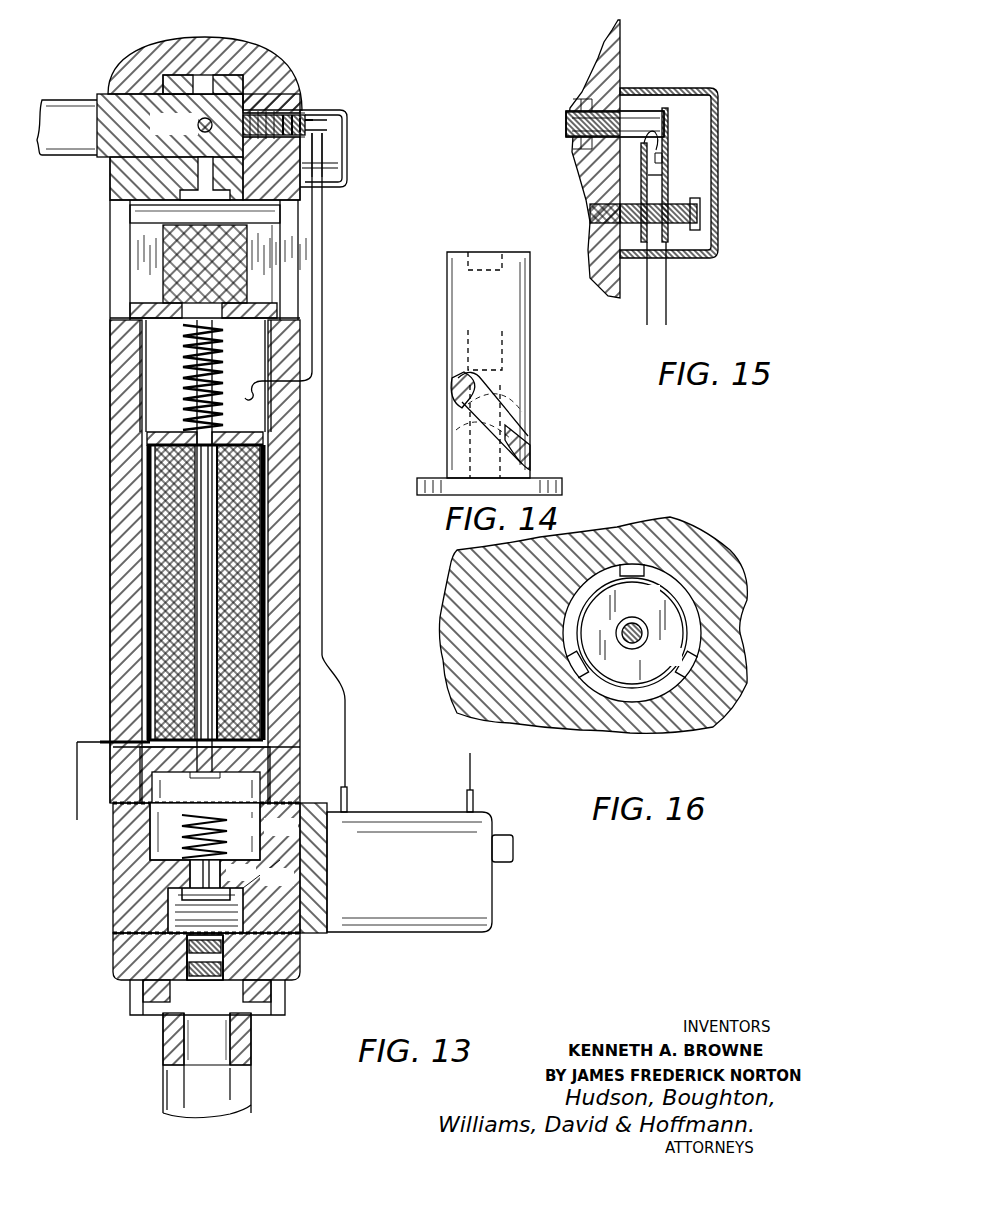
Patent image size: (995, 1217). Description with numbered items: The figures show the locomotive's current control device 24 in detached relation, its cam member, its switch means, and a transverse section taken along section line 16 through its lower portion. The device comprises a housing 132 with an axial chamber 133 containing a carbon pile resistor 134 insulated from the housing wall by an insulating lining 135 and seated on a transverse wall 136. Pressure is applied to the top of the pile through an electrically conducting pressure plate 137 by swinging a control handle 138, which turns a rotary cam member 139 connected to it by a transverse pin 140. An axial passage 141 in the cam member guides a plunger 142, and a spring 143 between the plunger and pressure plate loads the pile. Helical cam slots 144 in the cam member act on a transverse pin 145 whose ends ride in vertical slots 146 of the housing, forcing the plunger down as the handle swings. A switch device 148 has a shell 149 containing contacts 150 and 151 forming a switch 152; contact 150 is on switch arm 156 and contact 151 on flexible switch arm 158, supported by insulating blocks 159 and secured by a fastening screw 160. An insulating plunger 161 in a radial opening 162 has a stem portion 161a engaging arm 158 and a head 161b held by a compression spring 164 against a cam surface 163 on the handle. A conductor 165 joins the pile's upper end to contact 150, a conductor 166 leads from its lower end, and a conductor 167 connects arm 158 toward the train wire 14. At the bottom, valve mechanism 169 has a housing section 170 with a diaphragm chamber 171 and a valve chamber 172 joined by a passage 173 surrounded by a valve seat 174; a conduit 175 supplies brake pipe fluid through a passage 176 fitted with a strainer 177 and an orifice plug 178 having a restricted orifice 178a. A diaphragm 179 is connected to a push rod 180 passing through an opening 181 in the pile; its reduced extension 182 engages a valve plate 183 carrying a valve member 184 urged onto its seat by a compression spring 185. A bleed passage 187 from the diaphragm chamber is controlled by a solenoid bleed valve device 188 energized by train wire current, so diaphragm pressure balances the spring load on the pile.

In FIG. 13, the train wire 14 is at (472, 778).
In FIG. 13, the section line 16 is at (96, 905).
In FIG. 13, the current control device 24 is at (100, 478).
In FIG. 13, the housing 132 is at (120, 522).
In FIG. 15, the housing 132 is at (608, 62).
In FIG. 13, the axial chamber 133 is at (150, 436).
In FIG. 13, the carbon pile resistor 134 is at (250, 490).
In FIG. 13, the insulating lining 135 is at (268, 512).
In FIG. 13, the transverse wall 136 is at (150, 740).
In FIG. 13, the pressure plate 137 is at (172, 420).
In FIG. 13, the control handle 138 is at (76, 106).
In FIG. 13, the rotary cam member 139 is at (165, 272).
In FIG. 14, the rotary cam member 139 is at (512, 365).
In FIG. 13, the transverse pin 140 is at (170, 125).
In FIG. 13, the axial passage 141 is at (165, 300).
In FIG. 14, the axial passage 141 is at (520, 468).
In FIG. 13, the plunger 142 is at (165, 248).
In FIG. 13, the spring 143 is at (185, 345).
In FIG. 13, the helical cam slots 144 is at (292, 241).
In FIG. 14, the helical cam slots 144 is at (458, 386).
In FIG. 13, the transverse pin 145 is at (142, 212).
In FIG. 13, the vertical slots 146 is at (272, 282).
In FIG. 13, the switch device 148 is at (340, 122).
In FIG. 15, the switch device 148 is at (700, 88).
In FIG. 13, the housing or shell 149 is at (322, 110).
In FIG. 15, the housing or shell 149 is at (660, 88).
In FIG. 15, the switch contact 150 is at (642, 178).
In FIG. 15, the switch contact 151 is at (645, 150).
In FIG. 15, the switch 152 is at (650, 185).
In FIG. 15, the switch arm 156 is at (600, 206).
In FIG. 15, the flexible switch arm 158 is at (670, 110).
In FIG. 15, the insulating blocks 159 is at (698, 232).
In FIG. 15, the fastening screw 160 is at (698, 212).
In FIG. 13, the plunger 161 is at (265, 115).
In FIG. 15, the plunger 161 is at (580, 130).
In FIG. 13, the stem portion 161a is at (310, 120).
In FIG. 13, the head 161b is at (283, 115).
In FIG. 13, the radial opening 162 is at (292, 115).
In FIG. 13, the cam surface 163 is at (218, 110).
In FIG. 13, the compression spring 164 is at (300, 118).
In FIG. 13, the conductor 165 is at (315, 302).
In FIG. 15, the conductor 165 is at (647, 322).
In FIG. 13, the conductor 166 is at (77, 770).
In FIG. 13, the conductor 167 is at (325, 562).
In FIG. 15, the conductor 167 is at (666, 325).
In FIG. 13, the valve mechanism 169 is at (268, 874).
In FIG. 13, the housing section 170 is at (125, 940).
In FIG. 16, the housing section 170 is at (652, 730).
In FIG. 13, the diaphragm chamber 171 is at (152, 838).
In FIG. 13, the valve chamber 172 is at (190, 955).
In FIG. 16, the valve chamber 172 is at (668, 582).
In FIG. 13, the passage 173 is at (200, 896).
In FIG. 16, the passage 173 is at (642, 622).
In FIG. 13, the valve seat 174 is at (218, 868).
In FIG. 13, the conduit 175 is at (165, 1062).
In FIG. 13, the passage 176 is at (282, 985).
In FIG. 13, the strainer 177 is at (210, 982).
In FIG. 13, the orifice plug 178 is at (268, 980).
In FIG. 13, the restricted orifice 178a is at (145, 986).
In FIG. 13, the diaphragm 179 is at (258, 796).
In FIG. 13, the push rod 180 is at (200, 640).
In FIG. 13, the opening 181 is at (232, 622).
In FIG. 13, the reduced extension 182 is at (214, 842).
In FIG. 16, the reduced extension 182 is at (640, 644).
In FIG. 13, the valve plate 183 is at (292, 935).
In FIG. 16, the valve plate 183 is at (690, 637).
In FIG. 13, the valve member 184 is at (170, 900).
In FIG. 16, the valve member 184 is at (668, 612).
In FIG. 13, the compression spring 185 is at (228, 940).
In FIG. 13, the bleed passage or vent 187 is at (292, 862).
In FIG. 13, the bleed valve device 188 is at (395, 812).